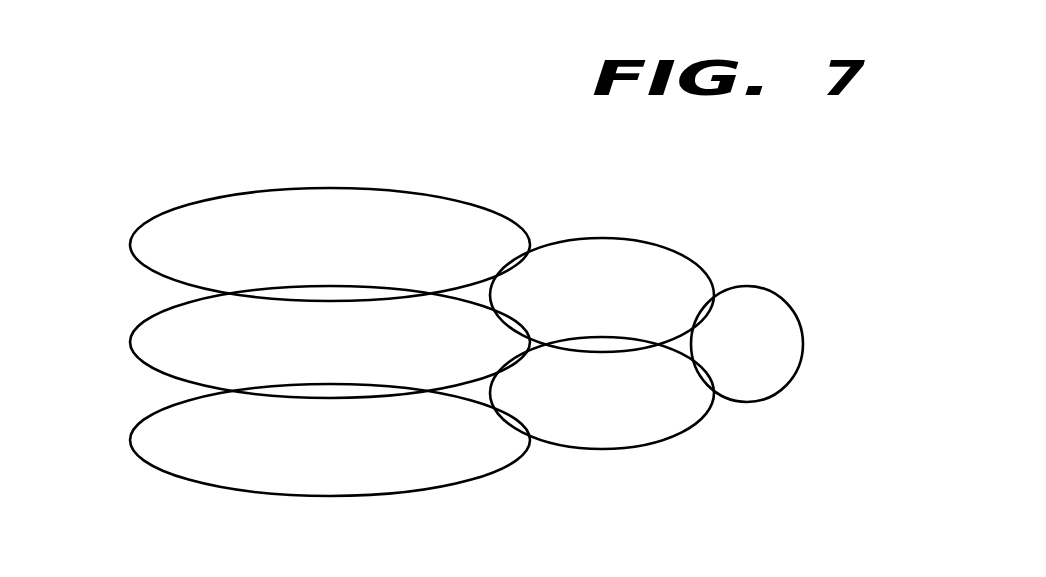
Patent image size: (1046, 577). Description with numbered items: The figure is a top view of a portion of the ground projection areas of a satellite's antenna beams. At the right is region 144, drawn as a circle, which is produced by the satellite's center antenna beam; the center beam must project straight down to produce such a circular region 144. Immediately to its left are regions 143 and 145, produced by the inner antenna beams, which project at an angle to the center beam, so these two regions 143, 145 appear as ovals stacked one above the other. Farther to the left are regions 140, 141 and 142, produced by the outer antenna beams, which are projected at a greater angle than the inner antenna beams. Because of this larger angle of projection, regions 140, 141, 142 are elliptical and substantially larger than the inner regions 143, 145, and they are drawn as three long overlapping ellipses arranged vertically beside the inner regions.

The outer antenna beam ground projection region 140 is at (435, 193).
The outer antenna beam ground projection region 141 is at (130, 340).
The outer antenna beam ground projection region 142 is at (435, 490).
The inner antenna beam ground projection region 143 is at (654, 240).
The center antenna beam ground projection region 144 is at (802, 344).
The inner antenna beam ground projection region 145 is at (655, 444).